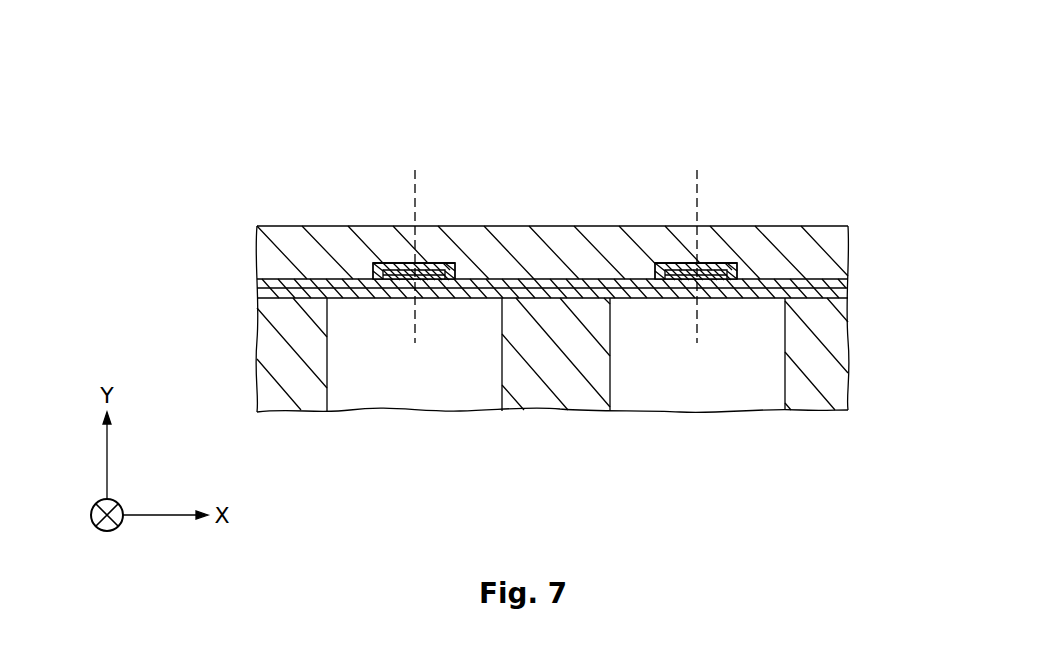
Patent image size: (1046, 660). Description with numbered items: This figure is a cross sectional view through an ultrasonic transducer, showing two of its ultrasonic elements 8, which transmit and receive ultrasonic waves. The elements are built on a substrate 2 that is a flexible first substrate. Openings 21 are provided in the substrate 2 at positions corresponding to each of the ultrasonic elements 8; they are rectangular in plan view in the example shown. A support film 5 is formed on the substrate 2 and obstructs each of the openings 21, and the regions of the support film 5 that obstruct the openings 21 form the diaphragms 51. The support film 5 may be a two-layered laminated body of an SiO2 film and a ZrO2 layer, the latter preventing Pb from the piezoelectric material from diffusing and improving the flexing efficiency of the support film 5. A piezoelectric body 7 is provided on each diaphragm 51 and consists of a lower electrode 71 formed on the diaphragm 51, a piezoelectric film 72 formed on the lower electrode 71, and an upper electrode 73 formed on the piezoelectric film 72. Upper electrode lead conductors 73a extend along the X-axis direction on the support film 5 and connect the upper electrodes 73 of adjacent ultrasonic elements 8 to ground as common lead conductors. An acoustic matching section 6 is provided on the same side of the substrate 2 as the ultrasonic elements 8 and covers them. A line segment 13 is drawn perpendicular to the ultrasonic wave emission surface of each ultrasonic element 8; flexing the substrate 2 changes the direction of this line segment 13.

The piezoelectric body 7 is at (483, 121).
The lower electrode 71 is at (388, 266).
The piezoelectric film 72 is at (405, 264).
The upper electrode 73 is at (432, 263).
The upper electrode lead conductor 73a is at (302, 283).
The line segment 13 is at (418, 222).
The ultrasonic element 8 is at (447, 252).
The acoustic matching section 6 is at (834, 251).
The support film 5 is at (842, 289).
The substrate 2 is at (829, 352).
The opening 21 is at (398, 370).
The diaphragm 51 is at (350, 300).